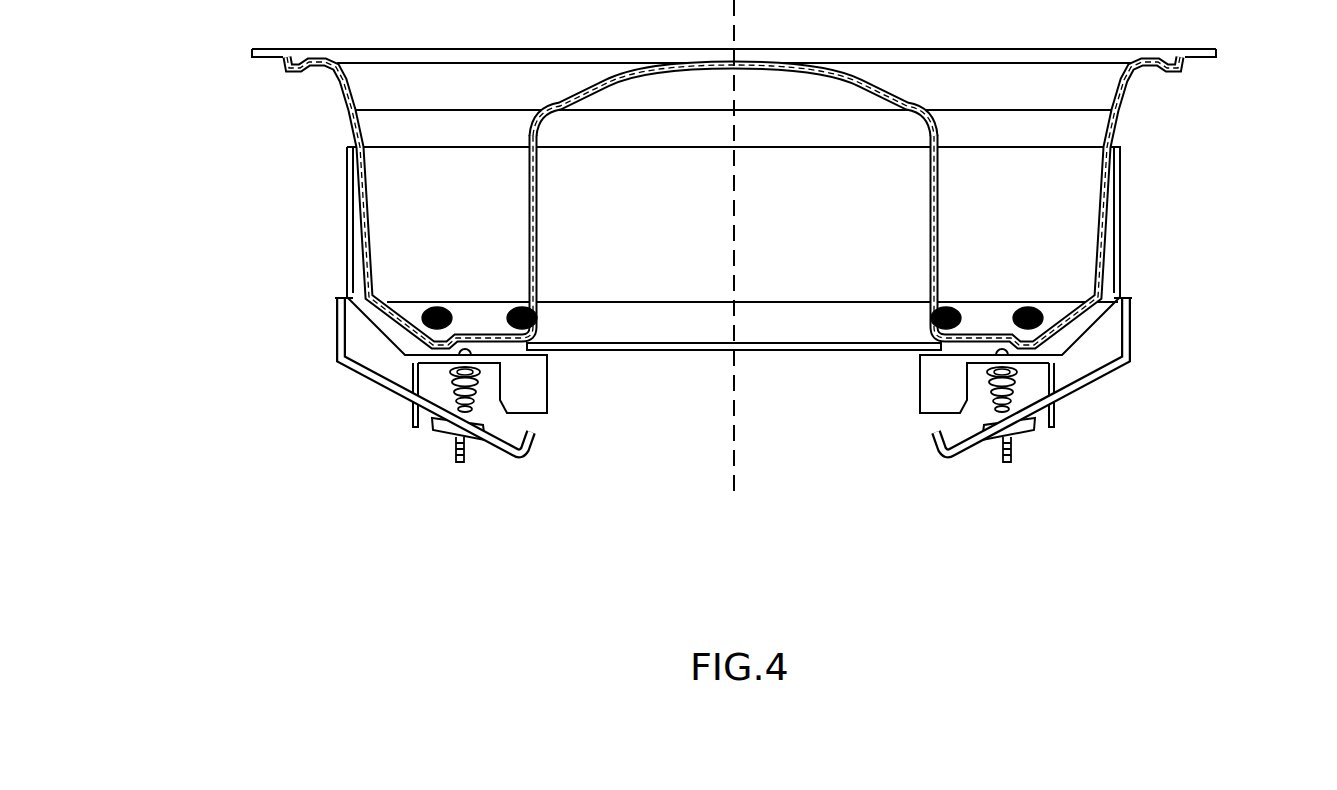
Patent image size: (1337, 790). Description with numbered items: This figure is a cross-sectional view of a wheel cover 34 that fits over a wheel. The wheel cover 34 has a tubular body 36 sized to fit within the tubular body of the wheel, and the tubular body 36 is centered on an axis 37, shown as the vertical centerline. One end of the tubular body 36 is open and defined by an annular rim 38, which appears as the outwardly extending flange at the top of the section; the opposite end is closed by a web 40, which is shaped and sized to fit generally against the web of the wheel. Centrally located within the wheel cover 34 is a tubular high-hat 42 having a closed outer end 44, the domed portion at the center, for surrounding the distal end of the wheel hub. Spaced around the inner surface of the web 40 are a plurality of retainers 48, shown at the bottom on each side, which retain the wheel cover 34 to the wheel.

The wheel cover 34 is at (337, 111).
The tubular body 36 is at (1106, 258).
The axis 37 is at (737, 422).
The annular rim 38 is at (1210, 55).
The web 40 is at (487, 343).
The tubular high-hat 42 is at (938, 207).
The closed outer end 44 is at (870, 90).
The retainers 48 is at (393, 401).